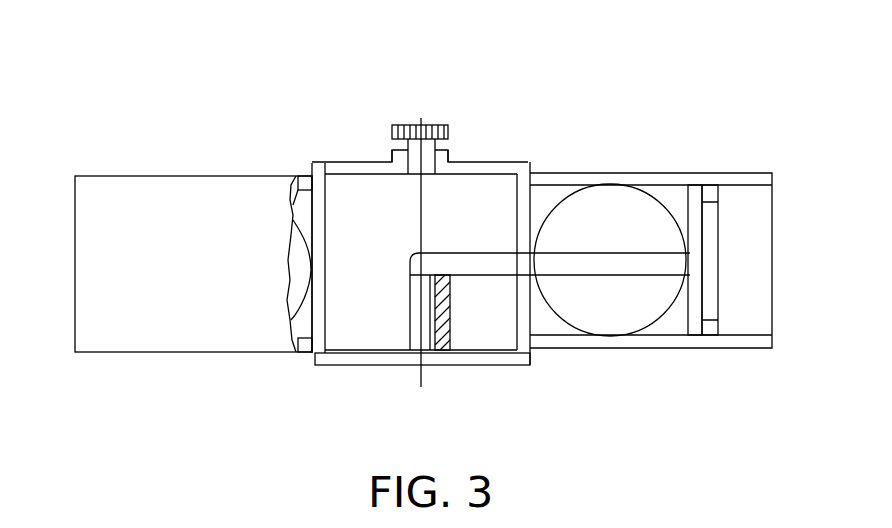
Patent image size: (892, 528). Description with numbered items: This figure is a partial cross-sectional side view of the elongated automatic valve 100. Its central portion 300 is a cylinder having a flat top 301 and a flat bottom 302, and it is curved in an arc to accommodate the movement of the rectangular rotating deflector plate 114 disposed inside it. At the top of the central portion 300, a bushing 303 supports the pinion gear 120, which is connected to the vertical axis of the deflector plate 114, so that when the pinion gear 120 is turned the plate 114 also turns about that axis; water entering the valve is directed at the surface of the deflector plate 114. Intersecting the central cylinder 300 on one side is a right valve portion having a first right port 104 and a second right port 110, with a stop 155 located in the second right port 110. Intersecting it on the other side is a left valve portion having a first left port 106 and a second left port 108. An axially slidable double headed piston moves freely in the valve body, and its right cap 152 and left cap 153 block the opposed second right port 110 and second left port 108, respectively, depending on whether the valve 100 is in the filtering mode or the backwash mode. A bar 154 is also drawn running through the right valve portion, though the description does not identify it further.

The valve 100 is at (173, 130).
The first right port 104 is at (602, 192).
The first left port 106 is at (295, 183).
The second left port 108 is at (73, 198).
The second right port 110 is at (763, 203).
The rotating deflector plate 114 is at (477, 203).
The pinion gear 120 is at (436, 127).
The right cap 152 is at (698, 335).
The left cap 153 is at (322, 168).
The bar 154 is at (573, 268).
The stop 155 is at (711, 190).
The central portion 300 is at (374, 152).
The flat top 301 is at (342, 162).
The flat bottom 302 is at (373, 365).
The bushing 303 is at (437, 151).